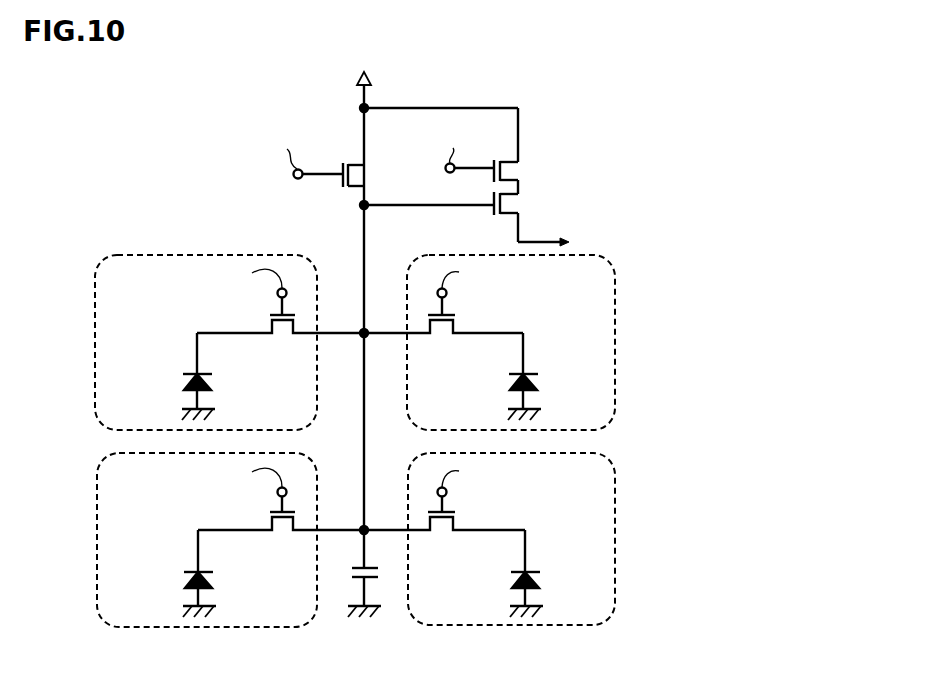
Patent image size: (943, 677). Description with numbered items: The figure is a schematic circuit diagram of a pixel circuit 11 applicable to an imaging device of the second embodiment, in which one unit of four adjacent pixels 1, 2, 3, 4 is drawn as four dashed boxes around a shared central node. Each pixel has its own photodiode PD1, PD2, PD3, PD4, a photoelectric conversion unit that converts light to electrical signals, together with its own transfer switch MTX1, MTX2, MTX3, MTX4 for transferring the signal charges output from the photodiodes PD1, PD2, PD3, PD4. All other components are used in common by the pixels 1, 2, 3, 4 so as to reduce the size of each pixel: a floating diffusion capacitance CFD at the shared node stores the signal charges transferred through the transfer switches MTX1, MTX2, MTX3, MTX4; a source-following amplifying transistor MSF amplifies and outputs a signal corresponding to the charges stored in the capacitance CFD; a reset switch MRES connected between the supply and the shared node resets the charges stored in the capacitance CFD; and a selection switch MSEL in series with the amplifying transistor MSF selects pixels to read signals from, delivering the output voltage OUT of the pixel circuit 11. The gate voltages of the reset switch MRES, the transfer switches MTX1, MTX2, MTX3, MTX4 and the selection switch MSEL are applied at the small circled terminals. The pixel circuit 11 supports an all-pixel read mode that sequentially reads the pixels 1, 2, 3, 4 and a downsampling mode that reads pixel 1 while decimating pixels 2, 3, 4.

The pixel circuit 11 is at (462, 49).
The pixel 1 is at (229, 342).
The pixel 2 is at (489, 342).
The pixel 3 is at (230, 540).
The pixel 4 is at (489, 539).
The reset switch MRES is at (336, 152).
The selection switch MSEL is at (497, 149).
The amplifying transistor MSF is at (462, 198).
The output voltage OUT is at (564, 233).
The floating diffusion capacitance CFD is at (352, 582).
The transfer switch MTX1 is at (280, 314).
The transfer switch MTX2 is at (443, 314).
The transfer switch MTX3 is at (281, 511).
The transfer switch MTX4 is at (444, 509).
The photodiode PD1 is at (179, 376).
The photodiode PD2 is at (501, 376).
The photodiode PD3 is at (179, 573).
The photodiode PD4 is at (502, 573).